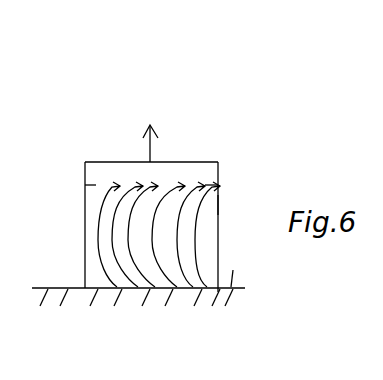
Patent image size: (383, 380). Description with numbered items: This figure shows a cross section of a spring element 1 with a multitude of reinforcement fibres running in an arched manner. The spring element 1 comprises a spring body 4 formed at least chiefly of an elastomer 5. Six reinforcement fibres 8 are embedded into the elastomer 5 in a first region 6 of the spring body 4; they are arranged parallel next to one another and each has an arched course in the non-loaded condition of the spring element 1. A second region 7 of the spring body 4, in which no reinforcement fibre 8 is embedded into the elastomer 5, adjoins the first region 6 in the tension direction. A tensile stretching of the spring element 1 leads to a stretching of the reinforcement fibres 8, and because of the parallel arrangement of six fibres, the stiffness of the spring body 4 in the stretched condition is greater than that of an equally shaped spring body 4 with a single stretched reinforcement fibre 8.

The spring element 1 is at (95, 142).
The spring body 4 is at (224, 206).
The elastomer 5 is at (198, 172).
The first region 6 is at (76, 187).
The second region 7 is at (80, 160).
The reinforcement fibre 8 is at (276, 312).